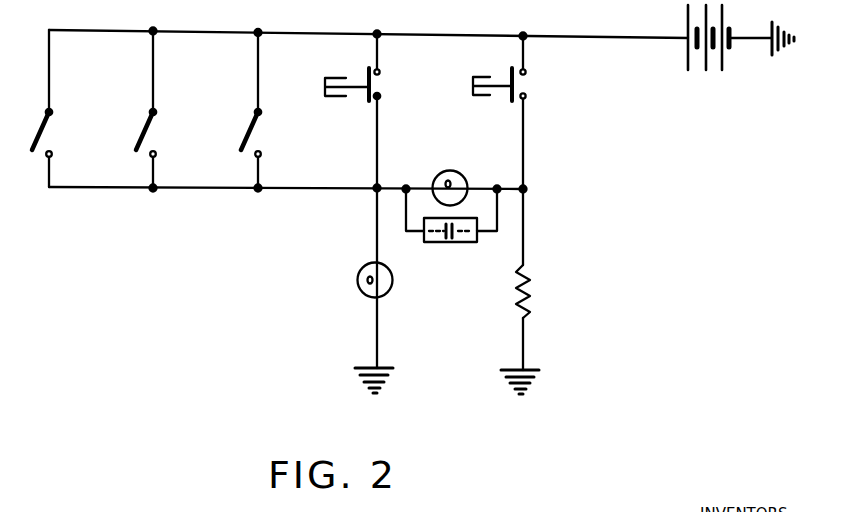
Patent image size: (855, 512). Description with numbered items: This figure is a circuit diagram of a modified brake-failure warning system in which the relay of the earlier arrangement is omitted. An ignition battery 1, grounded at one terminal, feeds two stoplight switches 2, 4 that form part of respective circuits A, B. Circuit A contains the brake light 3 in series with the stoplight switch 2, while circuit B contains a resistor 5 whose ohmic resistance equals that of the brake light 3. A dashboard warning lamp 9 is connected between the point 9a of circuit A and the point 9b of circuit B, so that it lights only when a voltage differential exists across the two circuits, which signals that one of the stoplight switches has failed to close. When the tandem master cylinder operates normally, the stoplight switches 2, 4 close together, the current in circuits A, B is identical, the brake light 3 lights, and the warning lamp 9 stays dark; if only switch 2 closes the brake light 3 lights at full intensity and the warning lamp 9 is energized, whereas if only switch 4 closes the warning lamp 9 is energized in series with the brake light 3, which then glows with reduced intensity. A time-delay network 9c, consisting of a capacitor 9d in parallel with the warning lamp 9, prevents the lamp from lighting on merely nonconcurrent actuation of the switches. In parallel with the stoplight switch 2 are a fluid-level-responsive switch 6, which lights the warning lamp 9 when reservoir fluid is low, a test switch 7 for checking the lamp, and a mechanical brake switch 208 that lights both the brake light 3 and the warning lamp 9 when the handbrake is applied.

The ignition battery 1 is at (697, 72).
The stoplight switch 2 is at (382, 93).
The brake light 3 is at (357, 291).
The stoplight switch 4 is at (527, 98).
The resistor 5 is at (541, 286).
The fluid-level-responsive switch 6 is at (269, 129).
The test switch 7 is at (60, 128).
The brake light switch 208 is at (165, 128).
The warning lamp 9 is at (471, 158).
The point 9a is at (375, 188).
The point 9b is at (525, 188).
The time-delay network 9c is at (466, 246).
The capacitor 9d is at (436, 248).
The circuit A is at (373, 230).
The circuit B is at (525, 242).